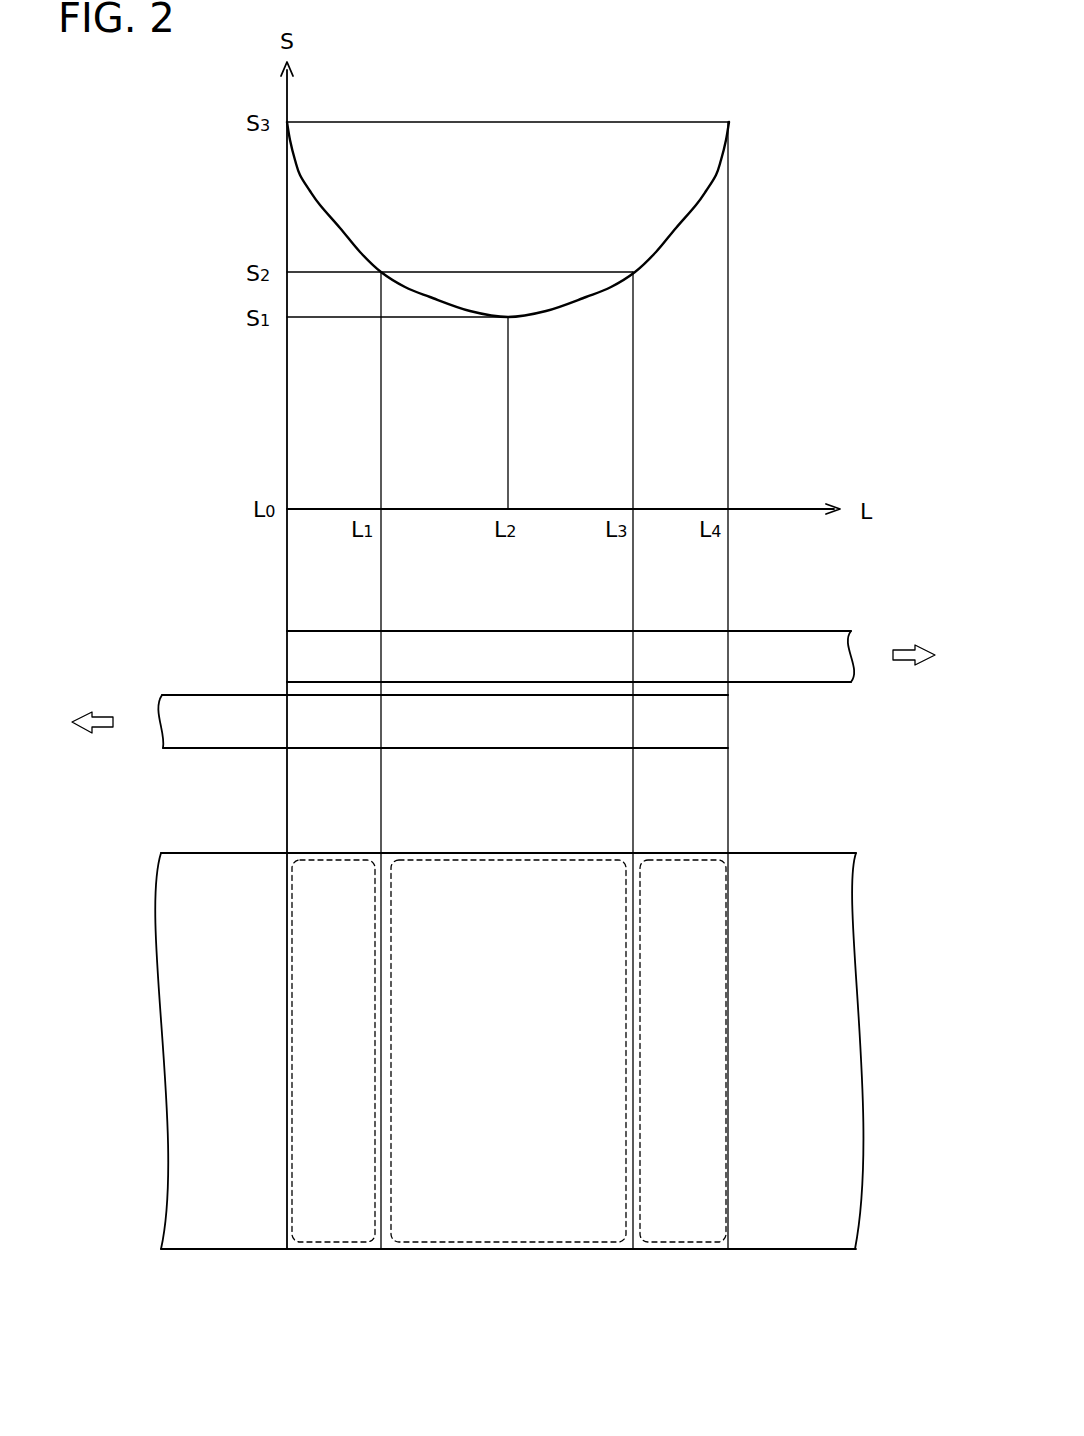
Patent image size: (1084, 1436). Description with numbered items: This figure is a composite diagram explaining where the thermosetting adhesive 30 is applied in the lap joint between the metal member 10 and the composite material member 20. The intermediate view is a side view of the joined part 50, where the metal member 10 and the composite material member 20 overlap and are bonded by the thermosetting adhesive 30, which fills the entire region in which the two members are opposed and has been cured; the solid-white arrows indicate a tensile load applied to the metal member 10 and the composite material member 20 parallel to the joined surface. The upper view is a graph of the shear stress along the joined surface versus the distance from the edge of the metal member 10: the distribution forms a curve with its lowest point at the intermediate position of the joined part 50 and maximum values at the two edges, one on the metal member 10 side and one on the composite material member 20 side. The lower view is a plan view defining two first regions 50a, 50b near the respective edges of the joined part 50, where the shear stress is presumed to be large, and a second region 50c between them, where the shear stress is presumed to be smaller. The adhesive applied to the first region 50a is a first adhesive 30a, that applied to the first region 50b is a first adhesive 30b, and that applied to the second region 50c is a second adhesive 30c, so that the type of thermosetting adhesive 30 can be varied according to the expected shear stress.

The metal member 10 is at (815, 631).
The composite material member 20 is at (215, 695).
The thermosetting adhesive 30 is at (708, 688).
The joined part 50 is at (722, 617).
The first adhesive 30a is at (333, 1243).
The first adhesive 30b is at (668, 1243).
The second adhesive 30c is at (490, 1243).
The first region 50a is at (378, 850).
The first region 50b is at (727, 850).
The second region 50c is at (630, 850).